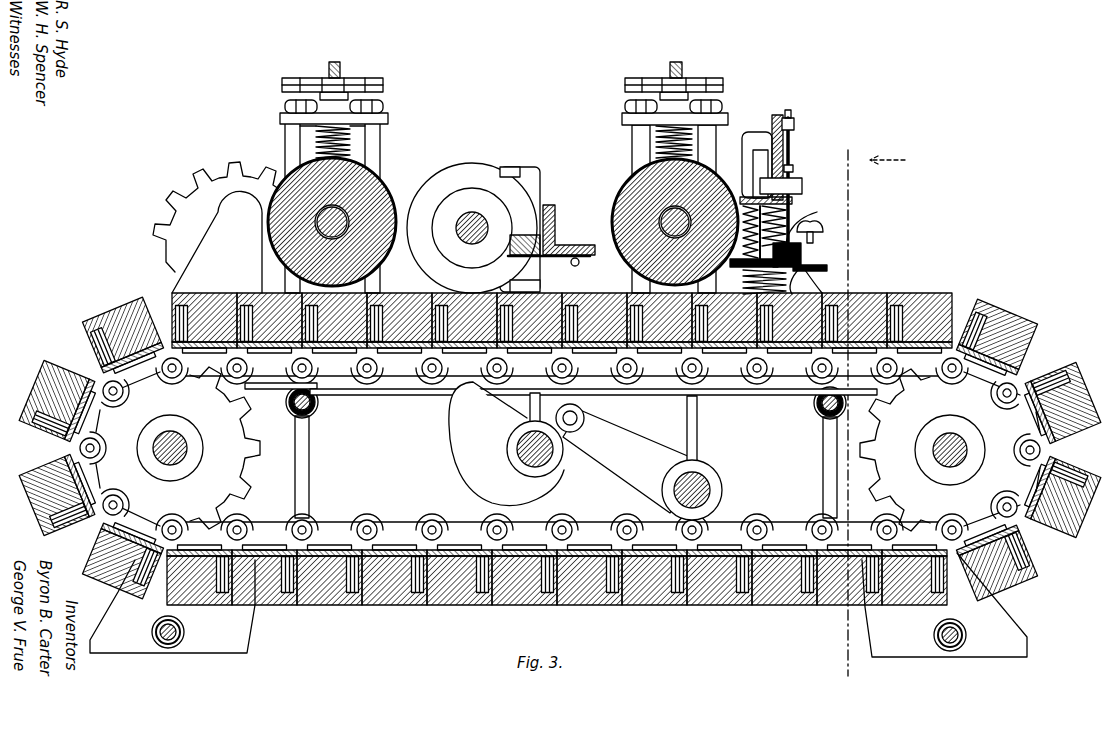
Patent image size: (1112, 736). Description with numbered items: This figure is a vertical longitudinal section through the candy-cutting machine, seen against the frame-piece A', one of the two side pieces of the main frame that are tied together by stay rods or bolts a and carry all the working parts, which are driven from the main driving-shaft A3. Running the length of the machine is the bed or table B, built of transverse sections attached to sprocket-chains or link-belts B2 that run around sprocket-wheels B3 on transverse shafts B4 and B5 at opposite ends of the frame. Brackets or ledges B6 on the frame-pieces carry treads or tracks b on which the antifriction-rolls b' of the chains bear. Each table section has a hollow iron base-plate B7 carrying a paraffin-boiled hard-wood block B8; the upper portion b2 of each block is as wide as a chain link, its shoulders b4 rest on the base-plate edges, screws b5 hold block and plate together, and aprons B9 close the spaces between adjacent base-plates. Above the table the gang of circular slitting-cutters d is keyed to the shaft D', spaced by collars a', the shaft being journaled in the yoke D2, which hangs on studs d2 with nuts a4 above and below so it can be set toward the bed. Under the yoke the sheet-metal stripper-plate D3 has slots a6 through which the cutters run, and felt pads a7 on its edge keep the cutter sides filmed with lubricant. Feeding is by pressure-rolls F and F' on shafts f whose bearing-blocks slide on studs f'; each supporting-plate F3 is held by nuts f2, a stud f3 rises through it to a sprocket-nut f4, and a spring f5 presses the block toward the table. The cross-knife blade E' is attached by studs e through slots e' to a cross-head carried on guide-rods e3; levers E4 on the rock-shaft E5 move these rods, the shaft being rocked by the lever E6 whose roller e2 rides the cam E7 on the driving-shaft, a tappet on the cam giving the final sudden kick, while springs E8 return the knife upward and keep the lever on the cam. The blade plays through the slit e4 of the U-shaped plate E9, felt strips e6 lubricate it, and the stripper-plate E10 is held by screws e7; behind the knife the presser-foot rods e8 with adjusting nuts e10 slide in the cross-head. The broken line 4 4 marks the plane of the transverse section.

The frame-piece A' is at (572, 424).
The stay rods or bolts a is at (568, 518).
The main driving-shaft A3 is at (552, 456).
The bed or table B is at (880, 294).
The sprocket-chains or link-belts B2 is at (1014, 420).
The sprocket-wheels B3 is at (248, 466).
The transverse shaft B4 is at (934, 446).
The transverse shaft B5 is at (152, 450).
The brackets or ledges B6 is at (660, 396).
The base-plate B7 is at (336, 540).
The hard-wood block or facing B8 is at (1026, 296).
The aprons B9 is at (46, 446).
The treads or tracks b is at (561, 390).
The antifriction-rolls b' is at (560, 449).
The upper or outer portion of block b2 is at (76, 328).
The shoulders b4 is at (250, 313).
The screws b5 is at (184, 325).
The circular cutters d is at (460, 165).
The studs d2 is at (518, 166).
The collars or washers a' is at (472, 222).
The shaft or arbor D' is at (467, 234).
The frame or yoke D2 is at (556, 218).
The stripper-plate D3 is at (580, 262).
The nuts a4 is at (540, 178).
The slots a6 is at (508, 256).
The felt pads a7 is at (528, 236).
The pressure-roll F is at (336, 220).
The pressure-roll F' is at (669, 221).
The shafts or axles f is at (503, 222).
The guide rods or studs f' is at (505, 139).
The nuts f2 is at (285, 106).
The cross-head or supporting-plate F3 is at (390, 117).
The stud f3 is at (342, 64).
The nut f4 is at (384, 82).
The spring f5 is at (316, 136).
The cutting-blade E' is at (804, 138).
The levers or cranks E4 is at (732, 233).
The shaft E5 is at (722, 482).
The lever E6 is at (630, 461).
The cam E7 is at (506, 443).
The springs E8 is at (743, 284).
The U-shaped plate E9 is at (802, 250).
The stripper-plate E10 is at (828, 267).
The bolts or studs e is at (796, 182).
The elongated holes or slots e' is at (814, 191).
The anti-friction-roller e2 is at (585, 412).
The guide-rods e3 is at (742, 204).
The slit or elongated opening e4 is at (820, 281).
The felt strips e6 is at (809, 225).
The screws e7 is at (826, 228).
The rods e8 is at (757, 165).
The nuts e10 is at (778, 128).
The section line 4 is at (873, 414).